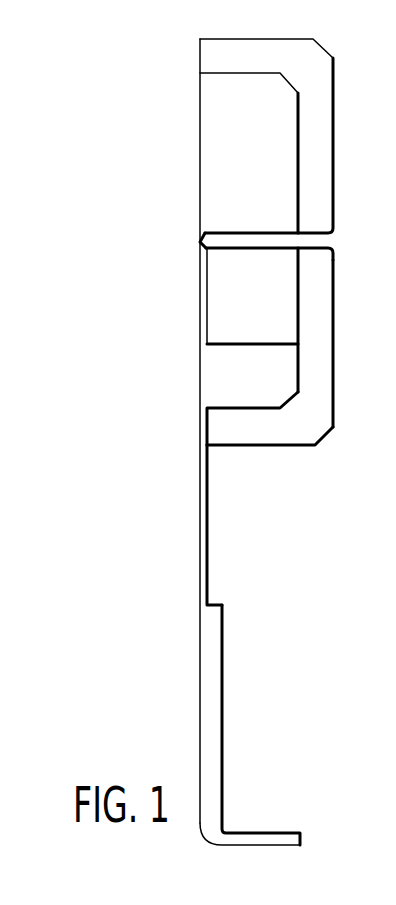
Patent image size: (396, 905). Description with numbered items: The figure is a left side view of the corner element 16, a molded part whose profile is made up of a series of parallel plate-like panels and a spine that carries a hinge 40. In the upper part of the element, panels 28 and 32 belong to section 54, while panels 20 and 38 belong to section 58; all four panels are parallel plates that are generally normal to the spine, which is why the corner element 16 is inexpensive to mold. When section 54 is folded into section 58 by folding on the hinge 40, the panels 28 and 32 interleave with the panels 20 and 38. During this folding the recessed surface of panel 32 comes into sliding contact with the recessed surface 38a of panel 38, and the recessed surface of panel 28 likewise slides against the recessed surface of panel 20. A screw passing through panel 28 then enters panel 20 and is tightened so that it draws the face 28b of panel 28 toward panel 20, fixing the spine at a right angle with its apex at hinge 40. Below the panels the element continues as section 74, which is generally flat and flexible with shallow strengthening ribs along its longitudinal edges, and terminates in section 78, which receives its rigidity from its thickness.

The corner element 16 is at (199, 40).
The panel 28 is at (223, 39).
The face 28b is at (334, 88).
The panel 32 is at (207, 90).
The section 54 is at (208, 117).
The hinge 40 is at (200, 241).
The section 58 is at (215, 263).
The recessed surface 38a is at (213, 297).
The panel 38 is at (208, 375).
The panel 20 is at (253, 438).
The section 74 is at (200, 560).
The section 78 is at (207, 677).